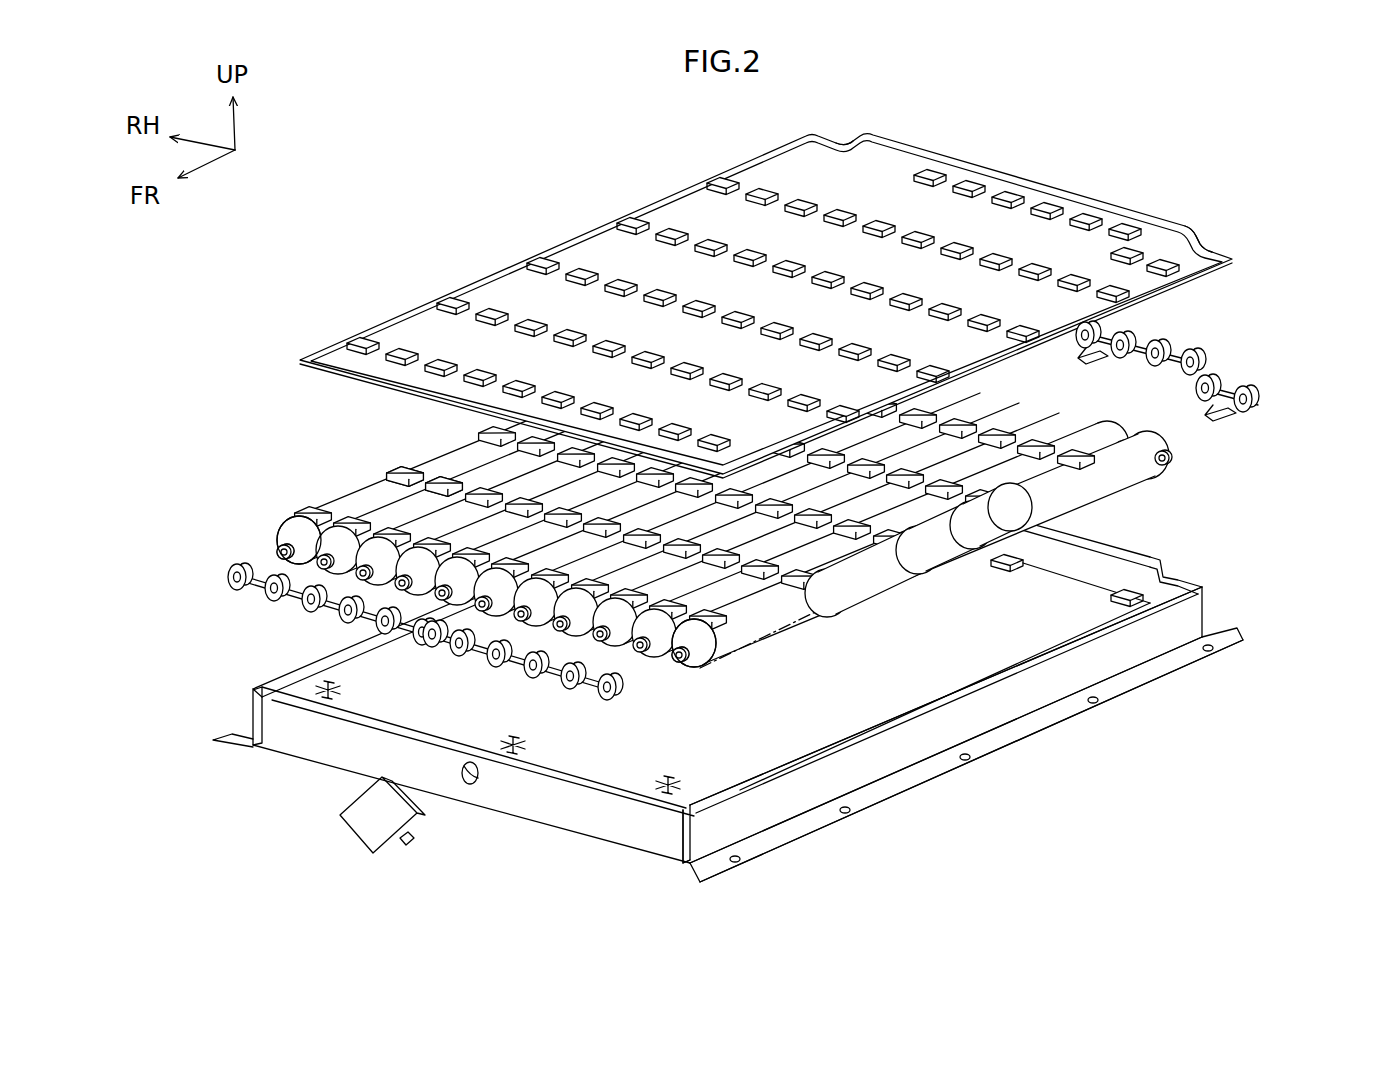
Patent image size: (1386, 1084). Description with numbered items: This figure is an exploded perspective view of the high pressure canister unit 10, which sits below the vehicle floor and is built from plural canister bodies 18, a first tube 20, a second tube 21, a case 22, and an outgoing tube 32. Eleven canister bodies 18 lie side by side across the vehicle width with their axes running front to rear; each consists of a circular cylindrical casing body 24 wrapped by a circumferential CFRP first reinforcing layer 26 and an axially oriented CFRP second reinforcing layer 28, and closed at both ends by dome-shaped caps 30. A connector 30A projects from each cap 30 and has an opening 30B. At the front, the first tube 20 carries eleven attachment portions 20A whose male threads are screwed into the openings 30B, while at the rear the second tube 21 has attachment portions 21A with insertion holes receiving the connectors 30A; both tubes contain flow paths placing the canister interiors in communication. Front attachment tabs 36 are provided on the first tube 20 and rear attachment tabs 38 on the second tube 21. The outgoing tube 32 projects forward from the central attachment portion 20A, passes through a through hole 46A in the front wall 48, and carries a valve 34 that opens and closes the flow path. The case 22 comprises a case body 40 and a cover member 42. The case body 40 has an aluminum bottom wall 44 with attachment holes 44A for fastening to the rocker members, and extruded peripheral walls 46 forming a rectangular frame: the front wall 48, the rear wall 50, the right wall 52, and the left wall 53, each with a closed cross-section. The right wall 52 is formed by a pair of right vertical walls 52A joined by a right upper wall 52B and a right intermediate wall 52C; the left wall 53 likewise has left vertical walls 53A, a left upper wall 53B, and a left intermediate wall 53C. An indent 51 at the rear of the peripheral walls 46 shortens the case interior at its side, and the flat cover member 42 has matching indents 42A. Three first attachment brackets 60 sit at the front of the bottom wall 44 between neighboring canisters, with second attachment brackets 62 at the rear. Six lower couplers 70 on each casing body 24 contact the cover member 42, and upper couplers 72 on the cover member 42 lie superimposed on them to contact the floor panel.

The high pressure canister unit 10 is at (415, 203).
The canister body 18 is at (468, 470).
The first tube 20 is at (226, 572).
The attachment portion 20A is at (555, 690).
The second tube 21 is at (1185, 345).
The attachment portion 21A is at (1240, 390).
The case 22 is at (870, 858).
The casing body 24 is at (860, 595).
The first reinforcing layer 26 is at (905, 565).
The second reinforcing layer 28 is at (950, 556).
The cap 30 is at (318, 536).
The connector 30A is at (282, 550).
The opening 30B is at (300, 545).
The outgoing tube 32 is at (425, 648).
The valve 34 is at (348, 845).
The front attachment tab 36 is at (268, 597).
The rear attachment tab 38 is at (1100, 370).
The case body 40 is at (1088, 845).
The cover member 42 is at (690, 178).
The indent 42A is at (845, 137).
The bottom wall 44 is at (975, 760).
The attachment hole 44A is at (745, 865).
The peripheral wall 46 is at (990, 730).
The through hole 46A is at (470, 785).
The front wall 48 is at (630, 825).
The rear wall 50 is at (1105, 527).
The indent 51 is at (1180, 578).
The right wall 52 is at (322, 652).
The right vertical wall 52A is at (250, 720).
The right upper wall 52B is at (262, 690).
The right intermediate wall 52C is at (225, 745).
The left wall 53 is at (905, 765).
The left vertical wall 53A is at (705, 875).
The left upper wall 53B is at (808, 760).
The left intermediate wall 53C is at (690, 865).
The first attachment bracket 60 is at (340, 688).
The second attachment bracket 62 is at (1003, 568).
The lower coupler 70 is at (405, 468).
The upper coupler 72 is at (403, 350).